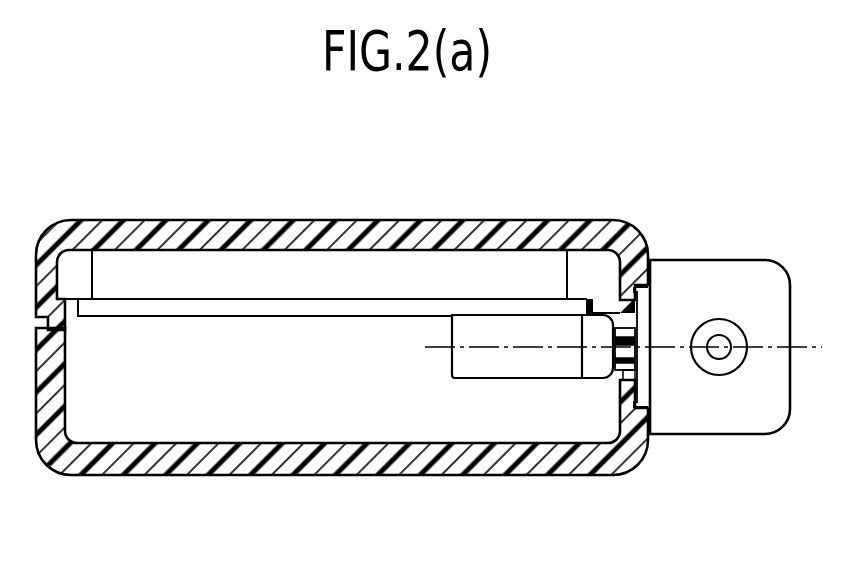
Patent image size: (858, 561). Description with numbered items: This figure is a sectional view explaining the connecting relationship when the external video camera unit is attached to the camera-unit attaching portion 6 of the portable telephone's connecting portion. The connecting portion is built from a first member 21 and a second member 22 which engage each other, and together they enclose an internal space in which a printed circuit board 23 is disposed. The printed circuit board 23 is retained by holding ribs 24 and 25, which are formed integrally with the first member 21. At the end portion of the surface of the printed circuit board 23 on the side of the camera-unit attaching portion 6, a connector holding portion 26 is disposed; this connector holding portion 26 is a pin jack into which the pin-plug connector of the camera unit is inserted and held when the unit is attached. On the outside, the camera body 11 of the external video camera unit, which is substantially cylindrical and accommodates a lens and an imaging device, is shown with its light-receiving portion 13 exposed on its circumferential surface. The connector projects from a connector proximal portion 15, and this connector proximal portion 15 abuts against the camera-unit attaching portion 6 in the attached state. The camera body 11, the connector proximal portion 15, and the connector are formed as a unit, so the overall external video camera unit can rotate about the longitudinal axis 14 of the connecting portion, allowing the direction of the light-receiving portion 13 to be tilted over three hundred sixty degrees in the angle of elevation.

The first member 21 is at (379, 222).
The second member 22 is at (232, 462).
The printed circuit board 23 is at (332, 310).
The holding rib 24 is at (93, 275).
The holding rib 25 is at (590, 262).
The connector holding portion 26 is at (515, 372).
The camera-unit attaching portion 6 is at (625, 372).
The connector proximal portion 15 is at (643, 318).
The camera body 11 is at (730, 260).
The light-receiving portion 13 is at (720, 360).
The longitudinal axis 14 is at (820, 342).